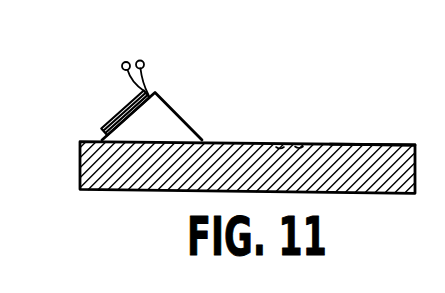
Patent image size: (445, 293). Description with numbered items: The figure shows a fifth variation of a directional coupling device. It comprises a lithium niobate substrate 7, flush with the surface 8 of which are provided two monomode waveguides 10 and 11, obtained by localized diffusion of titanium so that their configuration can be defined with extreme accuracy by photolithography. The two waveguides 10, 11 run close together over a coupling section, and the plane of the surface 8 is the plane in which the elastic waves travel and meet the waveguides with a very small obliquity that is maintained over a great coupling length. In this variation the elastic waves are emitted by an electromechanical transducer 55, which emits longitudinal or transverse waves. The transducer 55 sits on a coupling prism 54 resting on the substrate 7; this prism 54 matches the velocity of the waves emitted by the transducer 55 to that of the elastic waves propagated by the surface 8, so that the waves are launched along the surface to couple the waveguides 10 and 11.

The lithium niobate substrate 7 is at (79, 170).
The surface 8 is at (367, 145).
The monomode waveguide 10 is at (280, 146).
The monomode waveguide 11 is at (299, 146).
The coupling prism 54 is at (176, 112).
The electromechanical transducer 55 is at (102, 120).